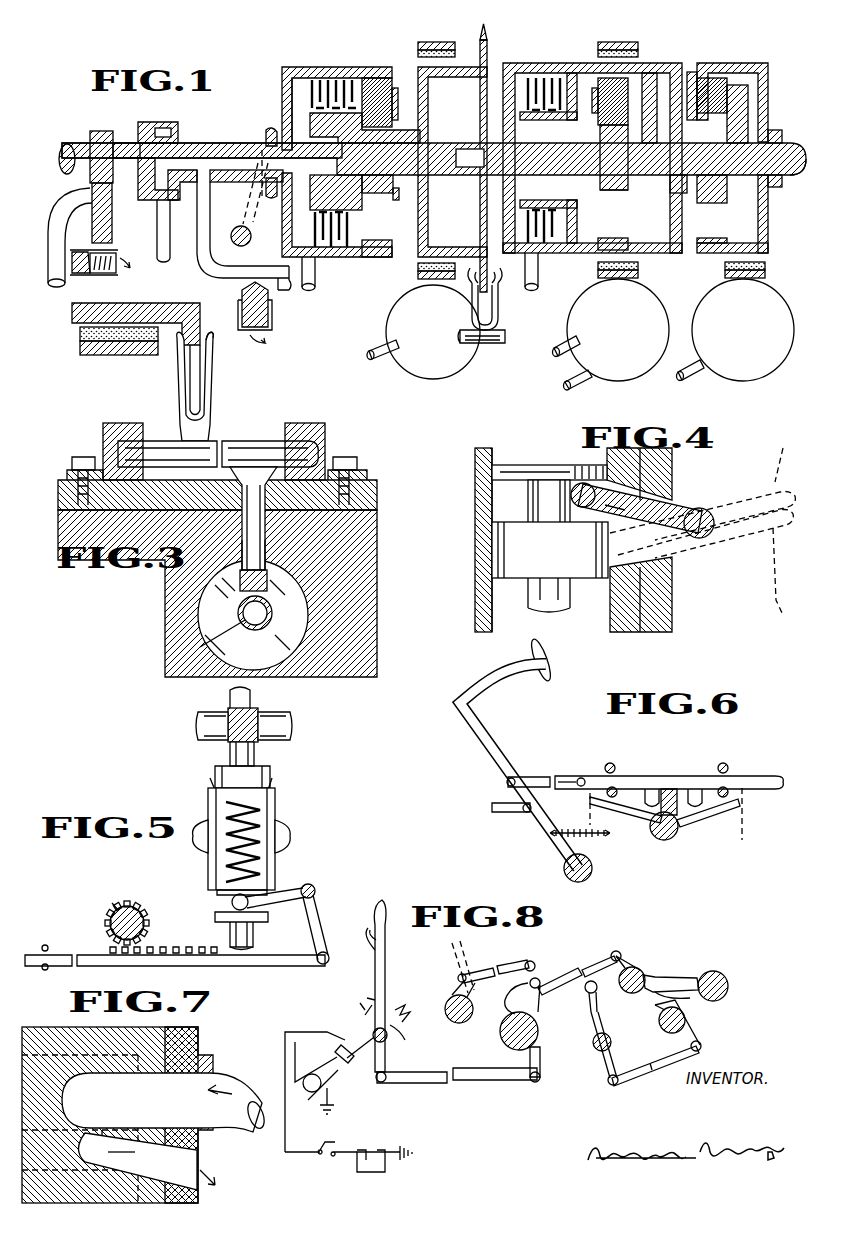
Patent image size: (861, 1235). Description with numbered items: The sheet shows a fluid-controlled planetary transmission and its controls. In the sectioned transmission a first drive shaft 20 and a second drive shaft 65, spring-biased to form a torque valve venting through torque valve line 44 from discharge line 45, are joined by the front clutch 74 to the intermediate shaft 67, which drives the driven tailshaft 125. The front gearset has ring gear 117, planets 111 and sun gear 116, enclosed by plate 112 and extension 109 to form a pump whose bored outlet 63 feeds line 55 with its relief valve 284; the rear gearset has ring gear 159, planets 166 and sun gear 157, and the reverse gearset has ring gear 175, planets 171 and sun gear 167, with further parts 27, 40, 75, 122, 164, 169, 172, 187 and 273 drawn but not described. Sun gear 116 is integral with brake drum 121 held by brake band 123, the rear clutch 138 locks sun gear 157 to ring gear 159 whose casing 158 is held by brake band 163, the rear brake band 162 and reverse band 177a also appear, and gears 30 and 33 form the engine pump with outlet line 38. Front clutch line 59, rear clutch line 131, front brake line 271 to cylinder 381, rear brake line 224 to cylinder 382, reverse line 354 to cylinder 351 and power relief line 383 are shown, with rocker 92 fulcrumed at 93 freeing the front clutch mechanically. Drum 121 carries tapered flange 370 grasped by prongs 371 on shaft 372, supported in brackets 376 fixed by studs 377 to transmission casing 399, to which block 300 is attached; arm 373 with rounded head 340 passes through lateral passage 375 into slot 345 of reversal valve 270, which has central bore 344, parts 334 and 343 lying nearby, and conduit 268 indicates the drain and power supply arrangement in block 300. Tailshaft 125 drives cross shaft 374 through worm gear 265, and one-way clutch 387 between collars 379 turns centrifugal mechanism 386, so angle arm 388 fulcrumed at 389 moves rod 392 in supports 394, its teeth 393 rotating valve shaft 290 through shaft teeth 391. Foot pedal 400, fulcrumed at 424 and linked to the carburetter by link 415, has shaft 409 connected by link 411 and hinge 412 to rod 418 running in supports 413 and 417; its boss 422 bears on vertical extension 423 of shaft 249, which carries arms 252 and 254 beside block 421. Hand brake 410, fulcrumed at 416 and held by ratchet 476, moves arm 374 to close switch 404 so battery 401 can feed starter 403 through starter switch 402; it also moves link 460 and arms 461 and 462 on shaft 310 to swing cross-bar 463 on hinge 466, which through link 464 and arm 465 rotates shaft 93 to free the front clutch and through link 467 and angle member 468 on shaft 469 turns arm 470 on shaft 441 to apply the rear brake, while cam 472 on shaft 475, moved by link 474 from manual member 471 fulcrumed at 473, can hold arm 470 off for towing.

In FIG. 1, the first drive shaft 20 is at (86, 150).
In FIG. 1, the collar 27 is at (160, 132).
In FIG. 1, the pump gear 30 is at (112, 187).
In FIG. 1, the pump gear 33 is at (112, 233).
In FIG. 1, the pressure pump line 38 is at (48, 232).
In FIG. 7, the pressure pump line 38 is at (240, 1078).
In FIG. 1, the bracket 40 is at (180, 195).
In FIG. 1, the torque valve line 44 is at (163, 248).
In FIG. 1, the discharge line 45 is at (214, 150).
In FIG. 1, the planetary pump outlet line 55 is at (205, 219).
In FIG. 1, the front clutch line 59 is at (315, 279).
In FIG. 1, the bored outlet 63 is at (365, 128).
In FIG. 1, the second drive shaft 65 is at (252, 148).
In FIG. 1, the intermediate shaft 67 is at (434, 159).
In FIG. 1, the front clutch 74 is at (310, 68).
In FIG. 1, the housing wall 75 is at (282, 84).
In FIG. 1, the rocker 92 is at (250, 200).
In FIG. 8, the rocker 92 is at (470, 946).
In FIG. 1, the fulcrum shaft 93 is at (250, 240).
In FIG. 8, the fulcrum shaft 93 is at (462, 1022).
In FIG. 1, the extension of intermediate shaft 109 is at (352, 78).
In FIG. 1, the planet gears 111 is at (378, 85).
In FIG. 1, the plate 112 is at (398, 200).
In FIG. 1, the sun gear 116 is at (372, 194).
In FIG. 1, the ring gear 117 is at (383, 258).
In FIG. 1, the brake drum 121 is at (455, 255).
In FIG. 3, the brake drum 121 is at (75, 315).
In FIG. 1, the bearing 122 is at (428, 30).
In FIG. 3, the bearing 122 is at (80, 352).
In FIG. 1, the brake band 123 is at (468, 30).
In FIG. 3, the brake band 123 is at (80, 335).
In FIG. 1, the driven shaft 125 is at (792, 180).
In FIG. 5, the driven shaft 125 is at (266, 712).
In FIG. 1, the rear clutch line 131 is at (538, 275).
In FIG. 1, the rear clutch 138 is at (545, 66).
In FIG. 1, the sun gear 157 is at (612, 190).
In FIG. 1, the ring gear casing 158 is at (668, 258).
In FIG. 1, the ring gear 159 is at (618, 222).
In FIG. 1, the rear brake band 162 is at (616, 30).
In FIG. 1, the brake band 163 is at (622, 44).
In FIG. 1, the clutch body 164 is at (650, 100).
In FIG. 1, the planet gears 166 is at (608, 70).
In FIG. 1, the sun gear 167 is at (712, 203).
In FIG. 1, the housing 169 is at (752, 95).
In FIG. 1, the planet gears 171 is at (698, 70).
In FIG. 1, the shaft step 172 is at (778, 131).
In FIG. 1, the reverse ring gear 175 is at (722, 72).
In FIG. 1, the brake band 177a is at (766, 270).
In FIG. 1, the link 187 is at (264, 198).
In FIG. 1, the rear brake line 224 is at (560, 345).
In FIG. 6, the shaft 249 is at (675, 838).
In FIG. 6, the arm 252 is at (712, 820).
In FIG. 6, the arm 254 is at (628, 817).
In FIG. 5, the worm gear 265 is at (220, 708).
In FIG. 7, the conduit 268 is at (120, 1146).
In FIG. 3, the reversal valve 270 is at (273, 625).
In FIG. 4, the reversal valve 270 is at (552, 556).
In FIG. 1, the front brake line 271 is at (375, 345).
In FIG. 1, the valve 273 is at (84, 274).
In FIG. 1, the relief valve 284 is at (270, 322).
In FIG. 5, the valve shaft 290 is at (108, 922).
In FIG. 3, the block 300 is at (345, 526).
In FIG. 4, the block 300 is at (475, 466).
In FIG. 7, the block 300 is at (60, 1066).
In FIG. 8, the shaft 310 is at (538, 1033).
In FIG. 3, the bore 334 is at (200, 633).
In FIG. 4, the bore 334 is at (562, 506).
In FIG. 3, the rounded head 340 is at (268, 588).
In FIG. 4, the rounded head 340 is at (600, 470).
In FIG. 4, the bar 343 is at (548, 470).
In FIG. 3, the central bore 344 is at (205, 658).
In FIG. 4, the slot 345 is at (497, 499).
In FIG. 1, the reverse cylinder 351 is at (780, 364).
In FIG. 1, the reverse line 354 is at (680, 380).
In FIG. 1, the tapered flange 370 is at (488, 34).
In FIG. 3, the tapered flange 370 is at (182, 360).
In FIG. 4, the tapered flange 370 is at (778, 586).
In FIG. 1, the prongs 371 is at (472, 302).
In FIG. 3, the prongs 371 is at (212, 378).
In FIG. 4, the prongs 371 is at (790, 492).
In FIG. 1, the shaft 372 is at (460, 334).
In FIG. 3, the shaft 372 is at (205, 450).
In FIG. 4, the shaft 372 is at (705, 509).
In FIG. 3, the actuating arm 373 is at (257, 560).
In FIG. 4, the actuating arm 373 is at (655, 505).
In FIG. 5, the cross shaft 374 is at (256, 755).
In FIG. 8, the cross shaft 374 is at (350, 1050).
In FIG. 3, the lateral passage 375 is at (268, 576).
In FIG. 4, the lateral passage 375 is at (683, 553).
In FIG. 3, the brackets 376 is at (136, 424).
In FIG. 3, the studs 377 is at (83, 457).
In FIG. 5, the collars 379 is at (218, 782).
In FIG. 1, the front brake operating cylinder 381 is at (462, 368).
In FIG. 1, the rear brake cylinder 382 is at (655, 372).
In FIG. 1, the power relief line 383 is at (575, 385).
In FIG. 5, the centrifugal mechanism 386 is at (285, 825).
In FIG. 5, the one-way clutch 387 is at (270, 775).
In FIG. 5, the angle arm 388 is at (278, 895).
In FIG. 5, the fulcrum 389 is at (312, 886).
In FIG. 5, the shaft teeth 391 is at (162, 885).
In FIG. 5, the rod 392 is at (275, 953).
In FIG. 5, the teeth 393 is at (172, 946).
In FIG. 5, the supports 394 is at (45, 945).
In FIG. 3, the transmission casing 399 is at (58, 492).
In FIG. 4, the transmission casing 399 is at (662, 585).
In FIG. 7, the transmission casing 399 is at (198, 1045).
In FIG. 6, the foot pedal 400 is at (548, 668).
In FIG. 8, the battery 401 is at (380, 1165).
In FIG. 8, the starter switch 402 is at (330, 1145).
In FIG. 8, the electric starter 403 is at (322, 1083).
In FIG. 8, the switch 404 is at (312, 1045).
In FIG. 6, the pedal shaft 409 is at (480, 730).
In FIG. 8, the hand brake 410 is at (385, 930).
In FIG. 6, the link 411 is at (540, 776).
In FIG. 6, the hinge 412 is at (575, 778).
In FIG. 6, the support 413 is at (606, 762).
In FIG. 6, the link 415 is at (508, 814).
In FIG. 8, the fulcrum 416 is at (375, 1030).
In FIG. 6, the support 417 is at (730, 768).
In FIG. 6, the rod 418 is at (768, 786).
In FIG. 6, the block 421 is at (682, 801).
In FIG. 6, the boss 422 is at (665, 785).
In FIG. 6, the vertical extension 423 is at (672, 790).
In FIG. 6, the fulcrum 424 is at (590, 862).
In FIG. 8, the shaft 441 is at (728, 984).
In FIG. 8, the link 460 is at (475, 1080).
In FIG. 8, the arm 461 is at (541, 1062).
In FIG. 8, the arm 462 is at (541, 1005).
In FIG. 8, the cross-bar 463 is at (535, 960).
In FIG. 8, the link 464 is at (512, 960).
In FIG. 8, the arm 465 is at (452, 986).
In FIG. 8, the hinge 466 is at (565, 970).
In FIG. 8, the link 467 is at (612, 960).
In FIG. 8, the angle member 468 is at (632, 965).
In FIG. 8, the shaft 469 is at (650, 973).
In FIG. 8, the arm 470 is at (680, 975).
In FIG. 8, the manual control member 471 is at (599, 995).
In FIG. 8, the cam 472 is at (655, 1008).
In FIG. 8, the fulcrum 473 is at (611, 1043).
In FIG. 8, the link 474 is at (700, 1052).
In FIG. 8, the shaft 475 is at (686, 1020).
In FIG. 8, the ratchet 476 is at (390, 1020).